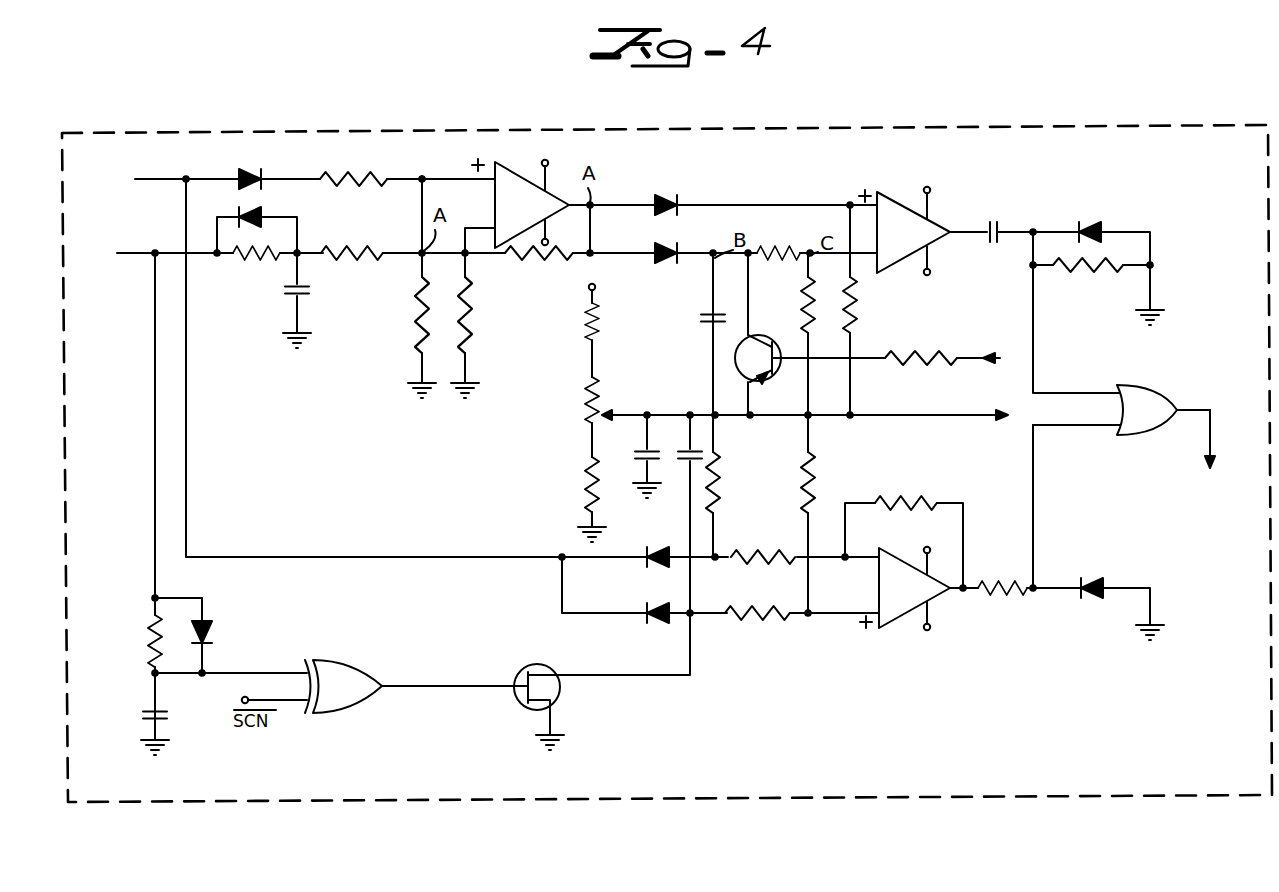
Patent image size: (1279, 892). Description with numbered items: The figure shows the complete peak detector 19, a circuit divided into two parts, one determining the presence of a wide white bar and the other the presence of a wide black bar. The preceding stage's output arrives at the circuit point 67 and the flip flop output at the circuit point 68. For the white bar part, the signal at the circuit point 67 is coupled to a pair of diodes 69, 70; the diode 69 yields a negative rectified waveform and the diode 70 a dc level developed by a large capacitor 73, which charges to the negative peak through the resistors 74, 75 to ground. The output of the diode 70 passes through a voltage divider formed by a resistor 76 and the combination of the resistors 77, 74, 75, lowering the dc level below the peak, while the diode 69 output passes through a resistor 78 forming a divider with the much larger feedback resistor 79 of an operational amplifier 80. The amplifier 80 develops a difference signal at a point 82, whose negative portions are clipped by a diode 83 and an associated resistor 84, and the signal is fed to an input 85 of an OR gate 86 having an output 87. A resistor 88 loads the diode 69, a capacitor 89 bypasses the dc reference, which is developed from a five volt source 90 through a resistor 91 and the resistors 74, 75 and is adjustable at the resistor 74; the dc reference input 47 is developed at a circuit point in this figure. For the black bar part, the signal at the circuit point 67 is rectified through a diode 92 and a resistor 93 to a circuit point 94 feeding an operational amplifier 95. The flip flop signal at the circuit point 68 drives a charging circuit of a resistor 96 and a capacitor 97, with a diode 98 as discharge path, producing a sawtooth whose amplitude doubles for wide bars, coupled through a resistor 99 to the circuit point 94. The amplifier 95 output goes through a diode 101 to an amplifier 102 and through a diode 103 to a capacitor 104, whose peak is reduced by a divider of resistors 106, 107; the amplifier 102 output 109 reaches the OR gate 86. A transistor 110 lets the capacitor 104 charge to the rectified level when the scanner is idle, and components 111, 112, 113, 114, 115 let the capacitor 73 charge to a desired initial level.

The peak detector 19 is at (777, 797).
The circuit point 67 is at (180, 178).
The circuit point 68 is at (155, 251).
The diode 92 is at (250, 172).
The resistor 93 is at (335, 177).
The circuit point 94 is at (424, 176).
The operational amplifier 95 is at (516, 180).
The resistor 96 is at (250, 256).
The capacitor 97 is at (302, 296).
The diode 98 is at (262, 210).
The resistor 99 is at (338, 250).
The diode 101 is at (667, 192).
The amplifier 102 is at (898, 196).
The diode 103 is at (667, 255).
The capacitor 104 is at (710, 318).
The resistor 106 is at (790, 240).
The resistor 107 is at (822, 322).
The output 109 is at (1010, 228).
The transistor 110 is at (754, 344).
The five volt source 90 is at (596, 290).
The resistor 91 is at (600, 325).
The resistor 74 is at (600, 395).
The resistor 75 is at (586, 484).
The capacitor 89 is at (645, 458).
The capacitor 73 is at (688, 450).
The resistor 88 is at (718, 484).
The resistor 77 is at (815, 476).
The resistor 78 is at (748, 554).
The resistor 76 is at (748, 617).
The diode 69 is at (650, 566).
The diode 70 is at (660, 624).
The feedback resistor 79 is at (906, 500).
The operational amplifier 80 is at (899, 550).
The resistor 84 is at (998, 600).
The point 82 is at (1035, 596).
The diode 83 is at (1095, 578).
The input 85 is at (1035, 448).
The OR gate 86 is at (1148, 390).
The output 87 is at (1212, 410).
The dc reference input 47 is at (940, 415).
The component 111 is at (152, 628).
The component 112 is at (213, 633).
The component 113 is at (348, 660).
The component 114 is at (150, 712).
The component 115 is at (546, 667).